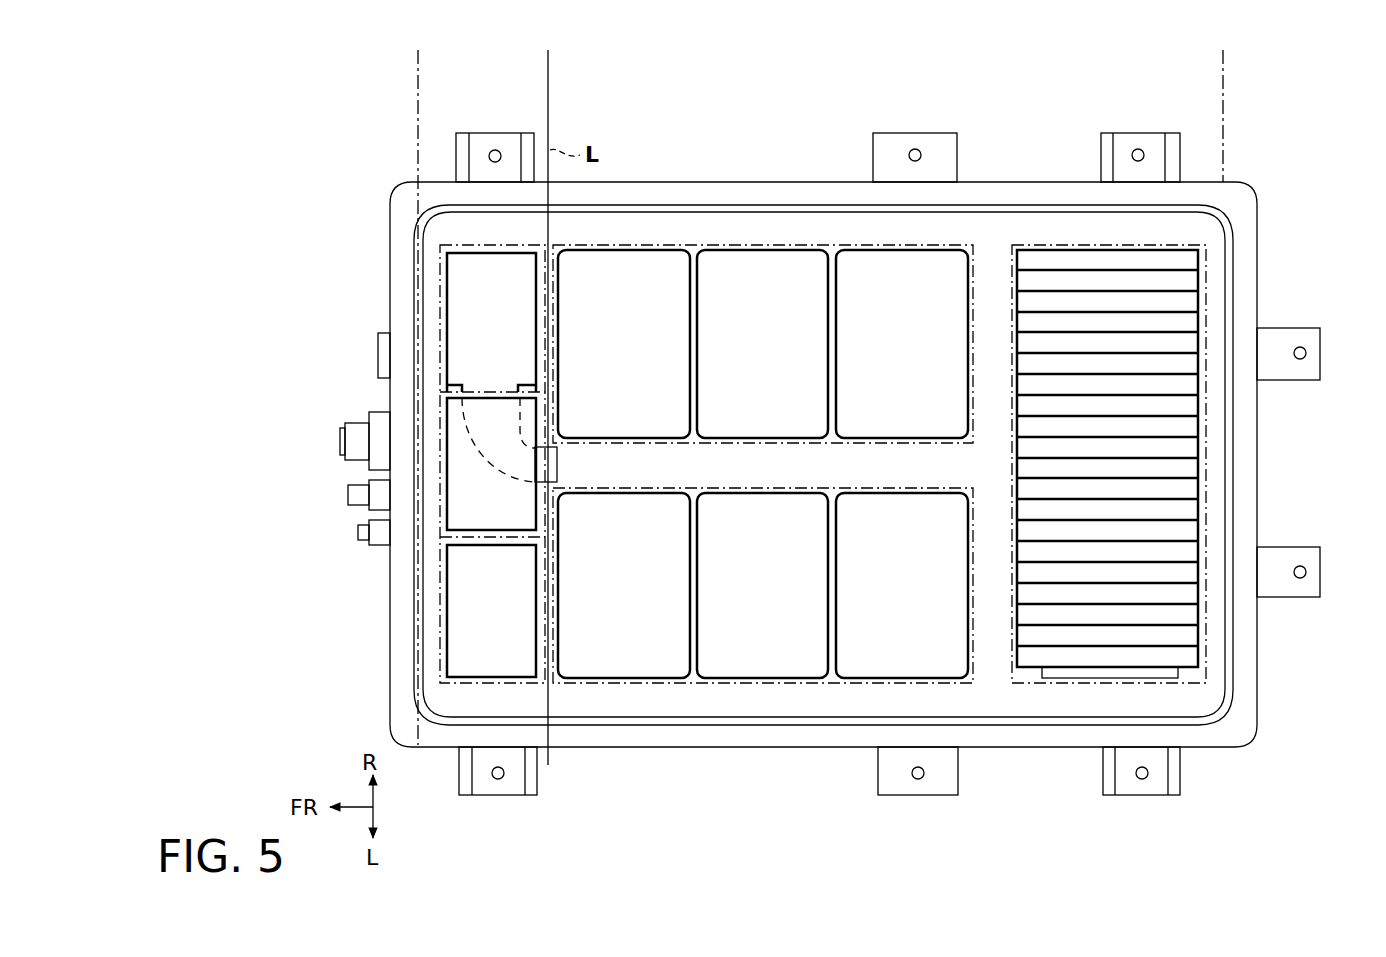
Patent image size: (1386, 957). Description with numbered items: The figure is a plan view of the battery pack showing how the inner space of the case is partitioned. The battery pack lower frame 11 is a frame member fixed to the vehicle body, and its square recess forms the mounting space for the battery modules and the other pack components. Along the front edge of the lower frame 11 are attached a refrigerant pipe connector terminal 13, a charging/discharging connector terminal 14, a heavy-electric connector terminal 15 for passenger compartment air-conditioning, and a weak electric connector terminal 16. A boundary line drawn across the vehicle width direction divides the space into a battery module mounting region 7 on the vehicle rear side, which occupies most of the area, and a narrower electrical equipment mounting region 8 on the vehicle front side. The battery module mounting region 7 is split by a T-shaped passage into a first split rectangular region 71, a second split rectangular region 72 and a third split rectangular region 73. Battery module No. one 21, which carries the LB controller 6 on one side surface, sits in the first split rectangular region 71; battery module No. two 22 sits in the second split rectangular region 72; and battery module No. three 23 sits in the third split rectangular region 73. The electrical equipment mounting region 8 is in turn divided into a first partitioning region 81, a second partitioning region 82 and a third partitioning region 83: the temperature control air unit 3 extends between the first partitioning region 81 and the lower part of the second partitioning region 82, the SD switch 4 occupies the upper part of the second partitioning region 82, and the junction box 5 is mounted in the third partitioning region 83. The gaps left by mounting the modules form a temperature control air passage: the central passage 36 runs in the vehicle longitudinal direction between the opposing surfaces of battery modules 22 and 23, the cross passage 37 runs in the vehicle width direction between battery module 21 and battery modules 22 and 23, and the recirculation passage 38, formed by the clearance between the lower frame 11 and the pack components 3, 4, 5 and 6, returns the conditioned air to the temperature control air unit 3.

The temperature control air unit 3 is at (476, 299).
The SD switch 4 is at (476, 497).
The junction box 5 is at (476, 623).
The LB controller 6 is at (1078, 674).
The battery module mounting region 7 is at (1221, 75).
The electrical equipment mounting region 8 is at (546, 75).
The battery pack lower frame 11 is at (630, 737).
The refrigerant pipe connector terminal 13 is at (378, 358).
The charging/discharging connector terminal 14 is at (340, 440).
The heavy-electric connector terminal 15 is at (348, 495).
The weak electric connector terminal 16 is at (358, 532).
The battery module No. 1 21 is at (1113, 469).
The battery module No. 2 22 is at (760, 330).
The battery module No. 3 23 is at (760, 595).
The central passage 36 is at (787, 463).
The cross passage 37 is at (993, 400).
The recirculation passage 38 is at (921, 230).
The first split rectangular region 71 is at (1055, 245).
The second split rectangular region 72 is at (737, 245).
The third split rectangular region 73 is at (697, 683).
The first partitioning region 81 is at (463, 247).
The second partitioning region 82 is at (437, 408).
The third partitioning region 83 is at (432, 664).